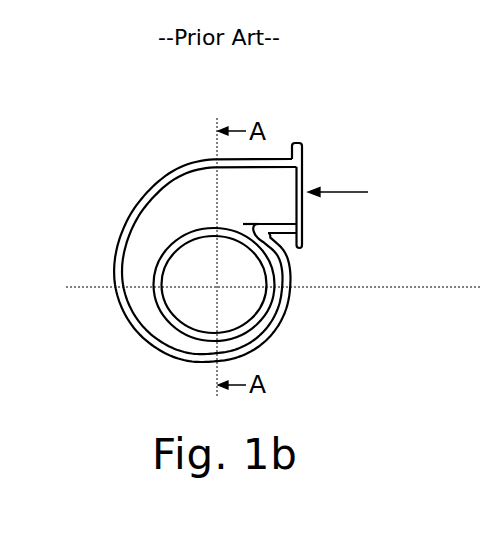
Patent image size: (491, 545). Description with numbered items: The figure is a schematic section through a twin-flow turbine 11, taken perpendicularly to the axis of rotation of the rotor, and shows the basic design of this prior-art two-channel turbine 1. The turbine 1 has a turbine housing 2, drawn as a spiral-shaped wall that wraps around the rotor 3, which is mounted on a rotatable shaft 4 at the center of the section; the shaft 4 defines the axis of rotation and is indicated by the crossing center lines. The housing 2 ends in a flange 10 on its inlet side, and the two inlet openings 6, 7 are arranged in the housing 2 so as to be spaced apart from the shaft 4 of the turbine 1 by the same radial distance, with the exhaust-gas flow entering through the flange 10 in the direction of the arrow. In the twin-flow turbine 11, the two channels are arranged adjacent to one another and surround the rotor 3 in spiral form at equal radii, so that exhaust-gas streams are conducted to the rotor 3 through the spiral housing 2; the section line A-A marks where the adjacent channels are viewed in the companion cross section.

The turbine 1 is at (231, 224).
The twin-flow turbine 11 is at (146, 170).
The turbine housing 2 is at (290, 262).
The rotor 3 is at (242, 313).
The shaft 4 is at (217, 287).
The inlet opening 6 is at (337, 212).
The inlet opening 7 is at (304, 200).
The flange 10 is at (302, 153).